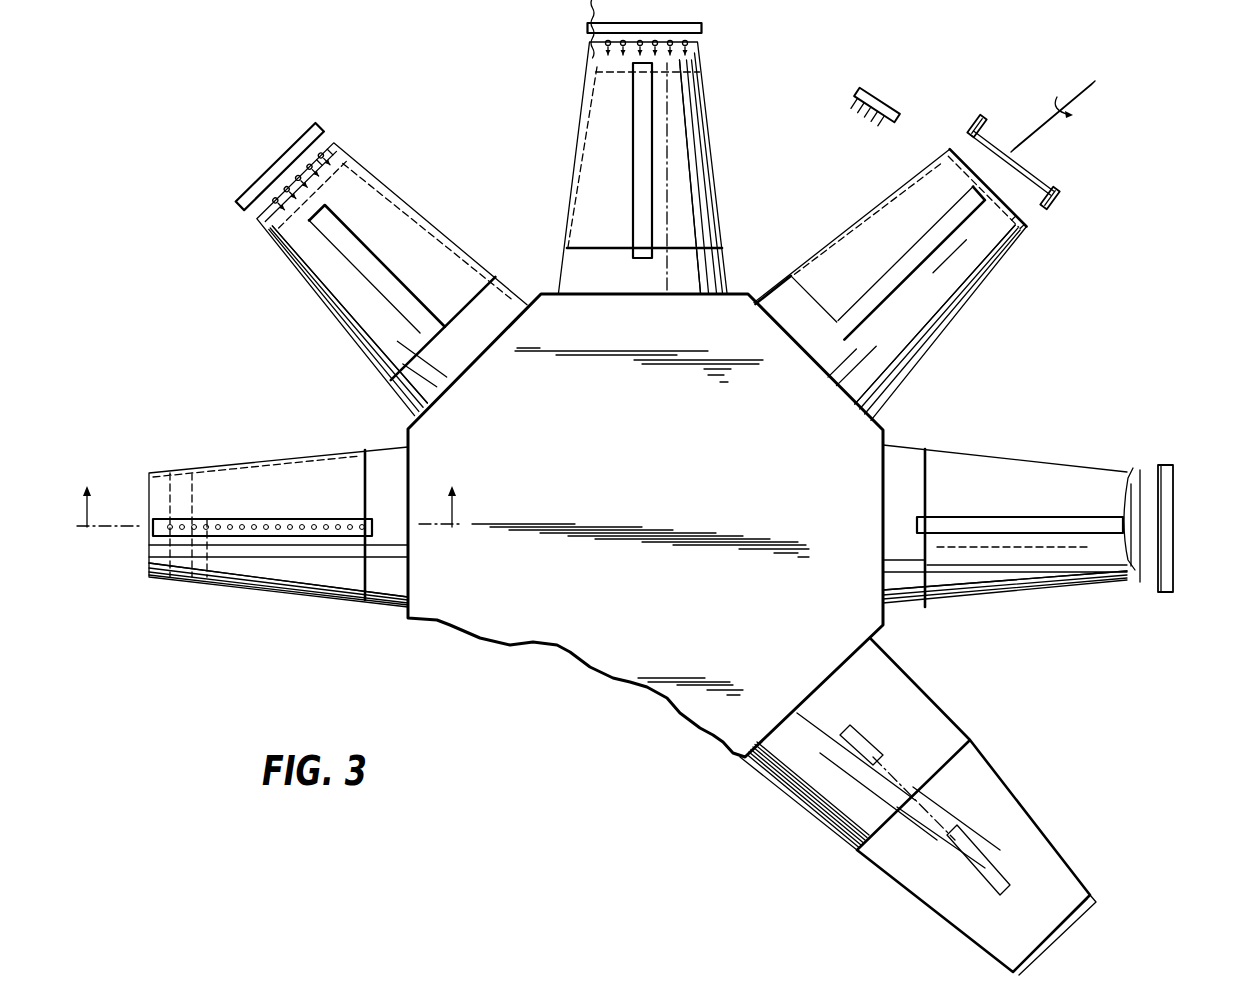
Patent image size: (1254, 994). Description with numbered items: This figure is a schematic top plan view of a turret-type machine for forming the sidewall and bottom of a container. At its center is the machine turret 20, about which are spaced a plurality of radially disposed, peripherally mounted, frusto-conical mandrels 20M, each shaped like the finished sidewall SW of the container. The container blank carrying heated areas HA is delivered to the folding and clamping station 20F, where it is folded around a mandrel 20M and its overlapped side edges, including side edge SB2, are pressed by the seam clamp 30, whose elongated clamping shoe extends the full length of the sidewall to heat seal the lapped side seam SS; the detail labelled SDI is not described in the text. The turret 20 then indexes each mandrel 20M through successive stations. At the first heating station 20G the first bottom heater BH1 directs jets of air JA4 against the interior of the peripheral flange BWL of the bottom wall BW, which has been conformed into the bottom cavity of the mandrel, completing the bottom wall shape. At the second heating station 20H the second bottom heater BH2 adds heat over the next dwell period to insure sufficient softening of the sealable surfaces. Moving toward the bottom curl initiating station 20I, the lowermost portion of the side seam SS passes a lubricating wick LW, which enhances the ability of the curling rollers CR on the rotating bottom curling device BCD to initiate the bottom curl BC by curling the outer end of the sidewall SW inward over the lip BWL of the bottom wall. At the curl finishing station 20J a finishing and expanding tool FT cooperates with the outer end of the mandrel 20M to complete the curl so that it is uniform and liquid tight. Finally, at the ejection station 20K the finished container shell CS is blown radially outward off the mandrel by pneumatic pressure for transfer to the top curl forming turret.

The machine turret 20 is at (636, 505).
The frusto conical mandrel 20M is at (474, 345).
The folding and clamping station 20F is at (138, 581).
The first heating station 20G is at (329, 260).
The second heating station 20H is at (669, 146).
The bottom curl initiating station 20I is at (1059, 71).
The bottom curl sealing and finishing station 20J is at (1054, 503).
The ejection station 20K is at (918, 806).
The seam clamp 30 is at (660, 118).
The sidewall SW is at (707, 182).
The bottom curl BC is at (350, 180).
The first bottom heater BH1 is at (290, 176).
The second bottom heater BH2 is at (718, 21).
The bottom wall BW is at (333, 152).
The jets of air JA4 is at (275, 228).
The lubricating wick LW is at (873, 83).
The curling rollers CR is at (966, 126).
The bottom curling device BCD is at (1027, 152).
The peripheral flange of the bottom wall BWL is at (1013, 245).
The finishing and expanding tool FT is at (1157, 550).
The heated areas HA is at (211, 588).
The side edge of the blank SB2 is at (277, 520).
The side seam SS is at (307, 533).
The slot detail SDI is at (303, 537).
The container shell CS is at (1048, 900).